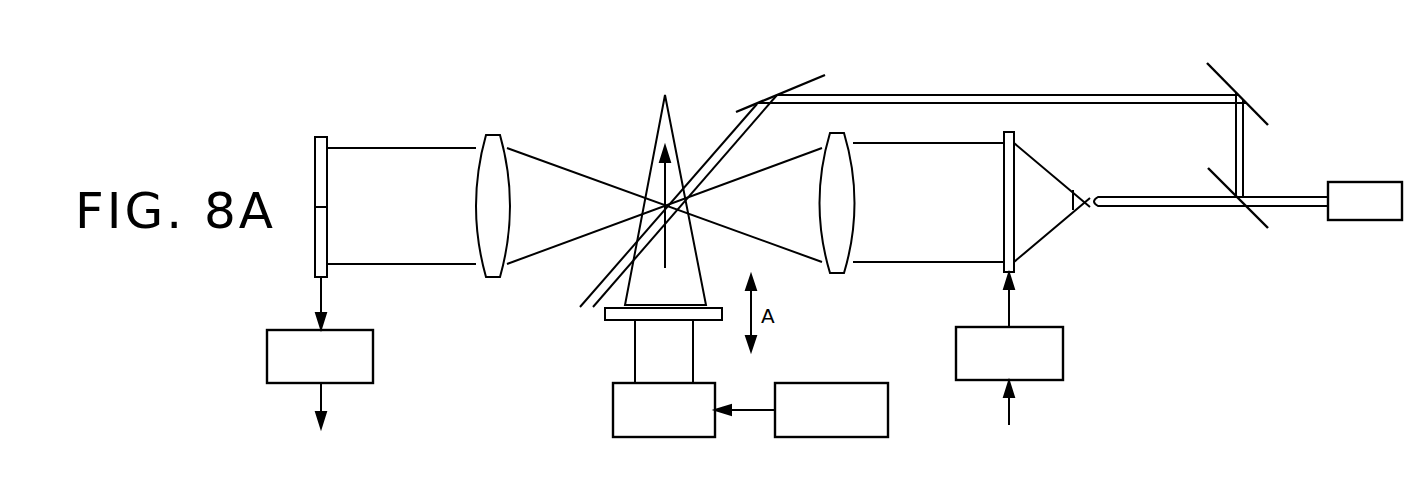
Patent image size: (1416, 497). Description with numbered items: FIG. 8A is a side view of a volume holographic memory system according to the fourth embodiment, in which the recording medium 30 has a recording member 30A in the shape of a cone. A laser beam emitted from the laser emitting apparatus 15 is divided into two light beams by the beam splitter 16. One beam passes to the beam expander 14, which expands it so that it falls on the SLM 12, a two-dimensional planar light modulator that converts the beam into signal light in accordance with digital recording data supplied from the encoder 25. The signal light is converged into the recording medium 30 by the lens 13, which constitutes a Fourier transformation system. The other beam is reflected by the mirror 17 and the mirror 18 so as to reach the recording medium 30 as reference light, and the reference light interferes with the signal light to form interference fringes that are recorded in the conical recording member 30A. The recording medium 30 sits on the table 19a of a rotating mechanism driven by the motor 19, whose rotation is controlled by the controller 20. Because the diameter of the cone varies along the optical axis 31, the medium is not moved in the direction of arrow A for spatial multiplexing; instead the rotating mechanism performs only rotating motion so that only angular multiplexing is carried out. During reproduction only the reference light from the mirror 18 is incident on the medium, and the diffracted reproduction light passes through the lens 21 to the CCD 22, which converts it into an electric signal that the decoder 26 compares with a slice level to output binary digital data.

The SLM 12 is at (1015, 133).
The lens 13 is at (837, 274).
The beam expander 14 is at (1082, 208).
The laser emitting apparatus 15 is at (1362, 221).
The beam splitter 16 is at (1252, 229).
The mirror 17 is at (1258, 114).
The mirror 18 is at (805, 82).
The motor 19 is at (660, 438).
The table 19a is at (607, 314).
The controller 20 is at (830, 438).
The lens 21 is at (492, 134).
The CCD 22 is at (320, 135).
The encoder 25 is at (1063, 353).
The decoder 26 is at (373, 360).
The recording medium 30 is at (658, 120).
The recording member 30A is at (683, 262).
The optical axis 31 is at (668, 183).